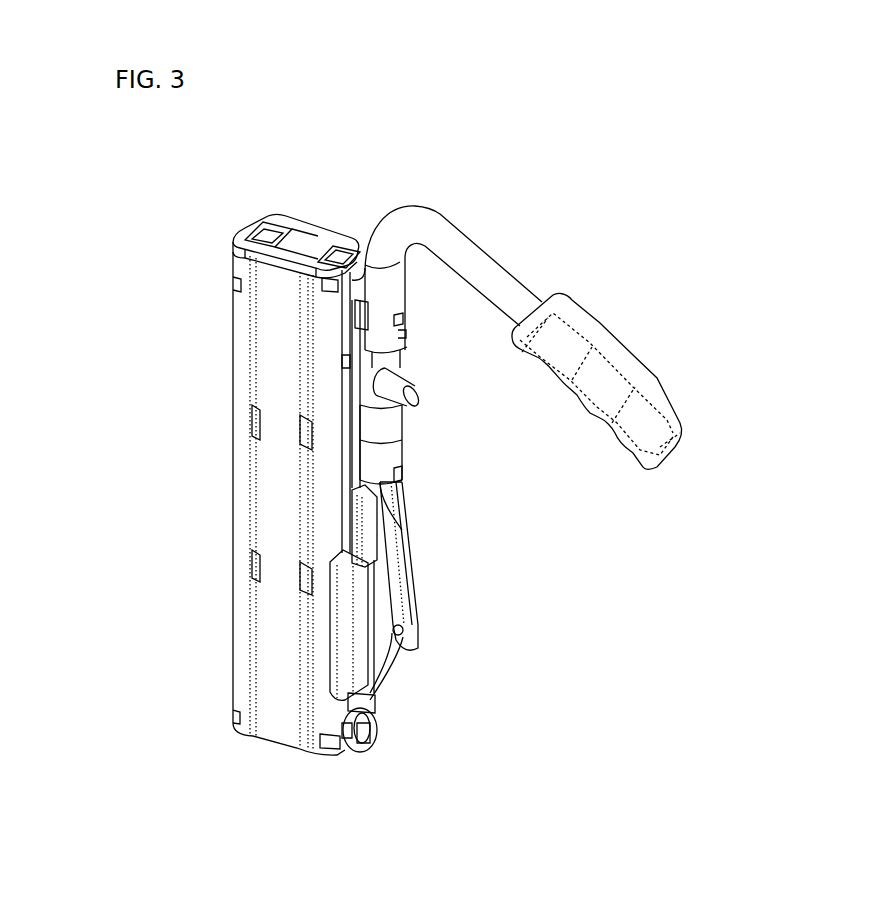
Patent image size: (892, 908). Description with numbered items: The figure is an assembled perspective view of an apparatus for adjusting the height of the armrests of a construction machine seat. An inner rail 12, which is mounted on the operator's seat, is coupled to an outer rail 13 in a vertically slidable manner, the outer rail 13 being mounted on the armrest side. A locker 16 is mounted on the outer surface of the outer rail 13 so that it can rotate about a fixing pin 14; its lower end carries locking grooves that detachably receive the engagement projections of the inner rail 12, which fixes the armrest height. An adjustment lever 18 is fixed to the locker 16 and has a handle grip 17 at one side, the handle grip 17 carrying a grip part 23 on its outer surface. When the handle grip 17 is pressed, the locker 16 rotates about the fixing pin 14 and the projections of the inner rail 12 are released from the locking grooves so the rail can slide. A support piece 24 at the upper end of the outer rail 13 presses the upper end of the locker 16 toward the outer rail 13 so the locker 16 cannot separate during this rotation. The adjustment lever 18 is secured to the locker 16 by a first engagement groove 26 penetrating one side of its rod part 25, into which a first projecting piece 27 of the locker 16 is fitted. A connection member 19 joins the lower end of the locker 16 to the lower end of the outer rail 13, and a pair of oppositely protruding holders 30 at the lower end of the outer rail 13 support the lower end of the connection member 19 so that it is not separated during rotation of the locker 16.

The inner rail 12 is at (307, 228).
The outer rail 13 is at (350, 756).
The fixing pin 14 is at (417, 397).
The locker 16 is at (410, 570).
The handle grip 17 is at (634, 401).
The adjustment lever 18 is at (558, 337).
The connection member 19 is at (392, 665).
The grip part 23 is at (595, 386).
The support piece 24 is at (347, 230).
The rod part 25 is at (395, 293).
The first engagement groove 26 is at (407, 327).
The first projecting piece 27 is at (404, 318).
The holders 30 is at (375, 707).